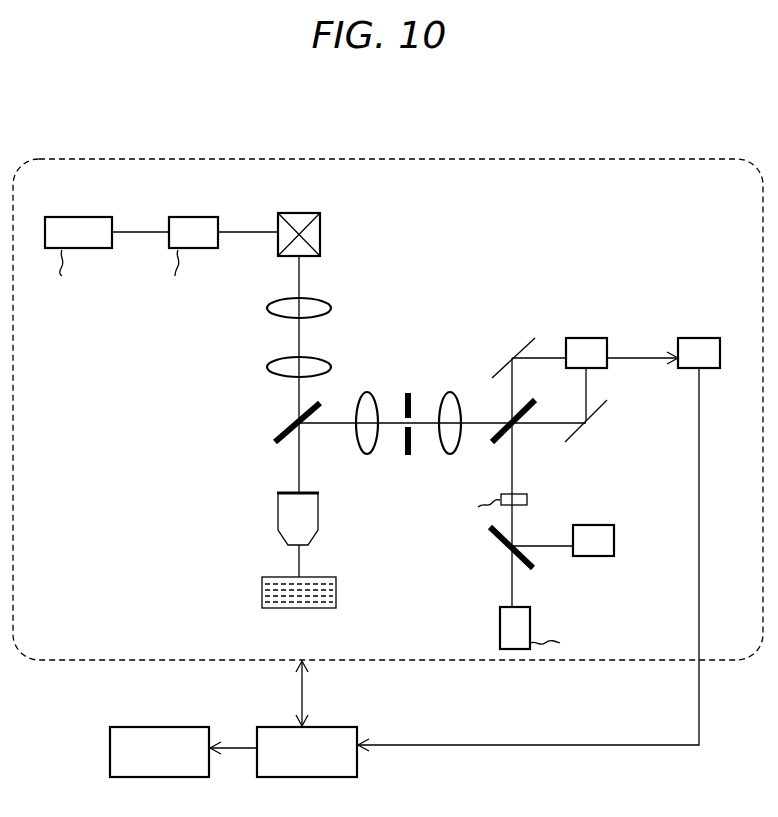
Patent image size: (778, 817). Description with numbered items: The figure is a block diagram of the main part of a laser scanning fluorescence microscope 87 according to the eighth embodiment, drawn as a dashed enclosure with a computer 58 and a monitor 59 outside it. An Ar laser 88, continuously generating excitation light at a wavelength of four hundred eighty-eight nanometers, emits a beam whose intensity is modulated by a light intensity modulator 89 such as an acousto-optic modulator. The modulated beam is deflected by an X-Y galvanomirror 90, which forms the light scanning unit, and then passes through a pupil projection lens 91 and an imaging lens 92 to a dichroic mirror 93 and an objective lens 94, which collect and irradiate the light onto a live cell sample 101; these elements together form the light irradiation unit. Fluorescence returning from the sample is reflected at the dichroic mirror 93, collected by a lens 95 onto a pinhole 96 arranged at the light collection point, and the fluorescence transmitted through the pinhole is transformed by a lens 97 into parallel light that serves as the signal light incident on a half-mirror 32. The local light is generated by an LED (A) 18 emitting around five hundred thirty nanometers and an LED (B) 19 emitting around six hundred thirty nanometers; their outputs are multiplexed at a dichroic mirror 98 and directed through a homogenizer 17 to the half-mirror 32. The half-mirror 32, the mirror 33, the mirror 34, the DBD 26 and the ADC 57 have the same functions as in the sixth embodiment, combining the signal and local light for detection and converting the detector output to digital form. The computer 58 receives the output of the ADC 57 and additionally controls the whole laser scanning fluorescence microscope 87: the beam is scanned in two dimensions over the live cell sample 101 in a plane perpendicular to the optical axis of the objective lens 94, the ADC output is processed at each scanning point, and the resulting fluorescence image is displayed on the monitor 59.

The laser scanning fluorescence microscope 87 is at (180, 160).
The Ar laser 88 is at (65, 222).
The light intensity modulator 89 is at (180, 222).
The X-Y galvanomirror 90 is at (294, 222).
The pupil projection lens 91 is at (314, 306).
The imaging lens 92 is at (314, 367).
The dichroic mirror 93 is at (274, 445).
The objective lens 94 is at (317, 500).
The live cell sample 101 is at (334, 578).
The lens 95 is at (370, 392).
The pinhole 96 is at (412, 392).
The lens 97 is at (452, 392).
The mirror 33 is at (522, 337).
The half-mirror 32 is at (493, 444).
The mirror 34 is at (597, 410).
The DBD 26 is at (578, 335).
The ADC 57 is at (688, 335).
The homogenizer 17 is at (527, 494).
The LED (B) 19 is at (615, 535).
The dichroic mirror 98 is at (492, 531).
The LED (A) 18 is at (530, 625).
The computer 58 is at (323, 733).
The monitor 59 is at (126, 733).